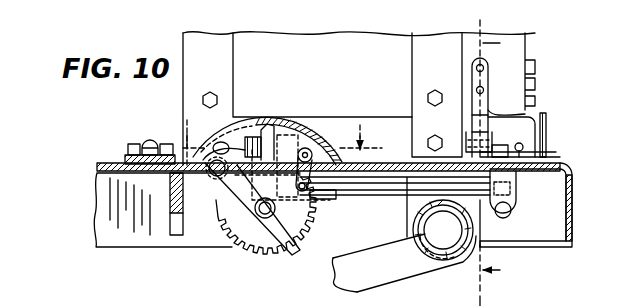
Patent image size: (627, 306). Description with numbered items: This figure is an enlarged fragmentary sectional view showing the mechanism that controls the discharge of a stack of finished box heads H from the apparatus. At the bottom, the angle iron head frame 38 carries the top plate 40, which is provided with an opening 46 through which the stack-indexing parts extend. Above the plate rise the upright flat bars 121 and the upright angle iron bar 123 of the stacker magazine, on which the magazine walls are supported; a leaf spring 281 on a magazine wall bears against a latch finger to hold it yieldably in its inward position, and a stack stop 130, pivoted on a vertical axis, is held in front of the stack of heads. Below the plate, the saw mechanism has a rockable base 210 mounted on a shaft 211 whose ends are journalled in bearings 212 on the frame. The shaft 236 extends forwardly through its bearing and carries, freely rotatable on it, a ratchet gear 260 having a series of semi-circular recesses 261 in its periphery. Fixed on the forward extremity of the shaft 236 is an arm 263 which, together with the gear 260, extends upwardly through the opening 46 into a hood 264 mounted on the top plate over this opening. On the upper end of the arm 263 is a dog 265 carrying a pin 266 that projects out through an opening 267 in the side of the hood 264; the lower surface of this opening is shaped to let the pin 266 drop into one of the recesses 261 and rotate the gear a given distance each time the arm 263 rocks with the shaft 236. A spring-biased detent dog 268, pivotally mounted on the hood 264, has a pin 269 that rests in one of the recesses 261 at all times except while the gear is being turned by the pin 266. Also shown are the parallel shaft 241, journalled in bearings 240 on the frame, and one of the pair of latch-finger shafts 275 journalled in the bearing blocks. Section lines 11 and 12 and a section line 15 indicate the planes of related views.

The upright angle iron bar 123 is at (222, 64).
The upright flat bar 121 is at (412, 55).
The section line 11 is at (502, 156).
The leaf spring 281 is at (474, 120).
The blank box head H is at (533, 65).
The stack stop 130 is at (548, 130).
The top plate 40 is at (560, 177).
The head frame 38 is at (122, 238).
The section line 15 is at (263, 142).
The opening 46 is at (345, 150).
The hood 264 is at (296, 120).
The dog 265 is at (228, 148).
The pin 266 is at (241, 150).
The opening 267 is at (265, 133).
The detent dog 268 is at (307, 150).
The ratchet gear 260 is at (250, 243).
The semi-circular recesses 261 is at (262, 251).
The arm 263 is at (255, 210).
The shaft 236 is at (289, 253).
The pin 269 is at (319, 197).
The shaft 275 is at (398, 190).
The bearing 240 is at (512, 190).
The shaft 241 is at (507, 207).
The bearing 212 is at (470, 232).
The rockable base 210 is at (405, 270).
The shaft 211 is at (447, 255).
The section line 12 is at (504, 301).